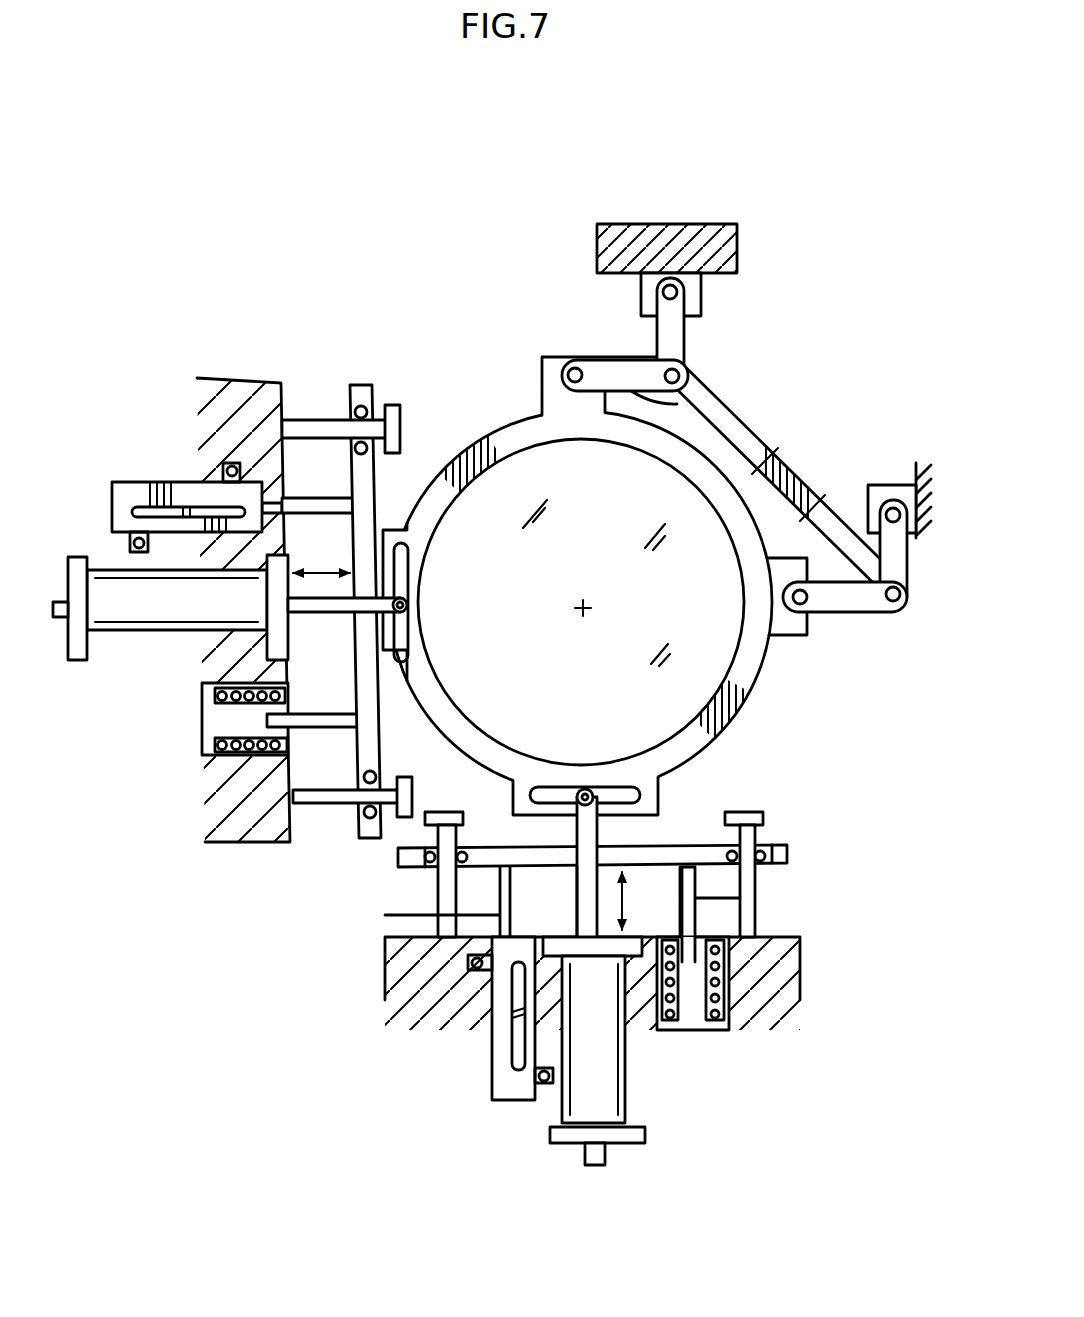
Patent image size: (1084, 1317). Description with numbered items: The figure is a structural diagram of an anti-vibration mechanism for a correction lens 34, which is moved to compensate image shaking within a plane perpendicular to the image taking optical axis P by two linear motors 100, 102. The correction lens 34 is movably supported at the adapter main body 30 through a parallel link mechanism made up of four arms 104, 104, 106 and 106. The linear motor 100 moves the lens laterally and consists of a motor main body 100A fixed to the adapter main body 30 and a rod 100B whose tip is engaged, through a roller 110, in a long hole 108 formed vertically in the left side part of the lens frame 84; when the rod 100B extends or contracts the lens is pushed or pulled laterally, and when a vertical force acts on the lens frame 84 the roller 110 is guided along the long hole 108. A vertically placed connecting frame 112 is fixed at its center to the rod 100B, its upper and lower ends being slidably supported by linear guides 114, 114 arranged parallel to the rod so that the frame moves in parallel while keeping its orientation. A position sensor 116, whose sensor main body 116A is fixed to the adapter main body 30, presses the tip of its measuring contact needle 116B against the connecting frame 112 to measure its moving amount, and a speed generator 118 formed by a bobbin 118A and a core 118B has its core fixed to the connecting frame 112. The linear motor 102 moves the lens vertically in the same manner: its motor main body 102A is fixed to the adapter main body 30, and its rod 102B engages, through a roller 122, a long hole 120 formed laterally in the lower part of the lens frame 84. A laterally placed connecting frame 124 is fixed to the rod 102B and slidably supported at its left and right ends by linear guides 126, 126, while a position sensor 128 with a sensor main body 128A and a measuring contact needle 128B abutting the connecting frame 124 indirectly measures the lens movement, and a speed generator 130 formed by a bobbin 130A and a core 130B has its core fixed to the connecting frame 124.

The adapter main body 30 is at (738, 241).
The correction lens 34 is at (736, 652).
The lens frame 84 is at (717, 478).
The image taking optical axis P is at (584, 610).
The linear motor 100 is at (174, 636).
The motor main body 100A is at (138, 614).
The rod 100B is at (392, 616).
The linear motor 102 is at (558, 1108).
The motor main body 102A is at (610, 1093).
The rod 102B is at (598, 887).
The arm 104 is at (680, 394).
The arm 106 is at (686, 342).
The long hole 108 is at (402, 562).
The roller 110 is at (408, 606).
The connecting frame 112 is at (373, 716).
The linear guide 114 is at (335, 421).
The position sensor 116 is at (193, 478).
The sensor main body 116A is at (138, 482).
The measuring contact needle 116B is at (377, 467).
The speed generator 118 is at (196, 718).
The bobbin 118A is at (214, 757).
The core 118B is at (330, 714).
The long hole 120 is at (600, 790).
The roller 122 is at (584, 788).
The connecting frame 124 is at (487, 850).
The linear guide 126 is at (437, 880).
The position sensor 128 is at (488, 1025).
The sensor main body 128A is at (502, 1082).
The measuring contact needle 128B is at (466, 962).
The speed generator 130 is at (700, 1035).
The bobbin 130A is at (728, 998).
The core 130B is at (690, 898).